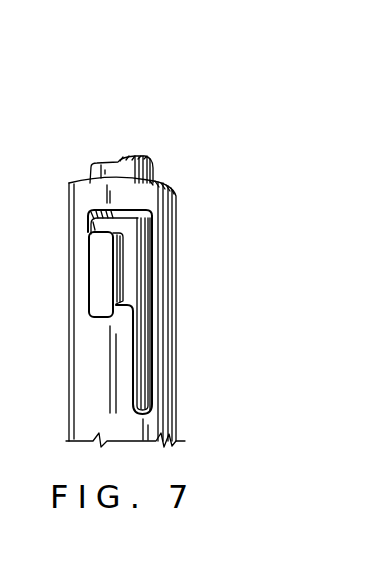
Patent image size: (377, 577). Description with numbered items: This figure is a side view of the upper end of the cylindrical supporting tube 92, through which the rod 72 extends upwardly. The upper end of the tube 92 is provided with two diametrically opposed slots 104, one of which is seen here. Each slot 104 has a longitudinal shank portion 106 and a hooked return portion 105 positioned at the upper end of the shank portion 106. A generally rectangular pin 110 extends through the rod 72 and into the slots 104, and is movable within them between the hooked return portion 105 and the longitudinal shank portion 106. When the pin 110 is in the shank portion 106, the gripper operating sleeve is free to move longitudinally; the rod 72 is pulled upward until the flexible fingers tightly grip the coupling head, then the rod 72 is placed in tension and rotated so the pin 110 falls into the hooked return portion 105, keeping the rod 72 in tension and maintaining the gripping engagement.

The rod 72 is at (155, 170).
The cylindrical supporting tube 92 is at (88, 384).
The slot 104 is at (148, 223).
The hooked return portion 105 is at (96, 260).
The longitudinal shank portion 106 is at (149, 350).
The pin 110 is at (99, 285).